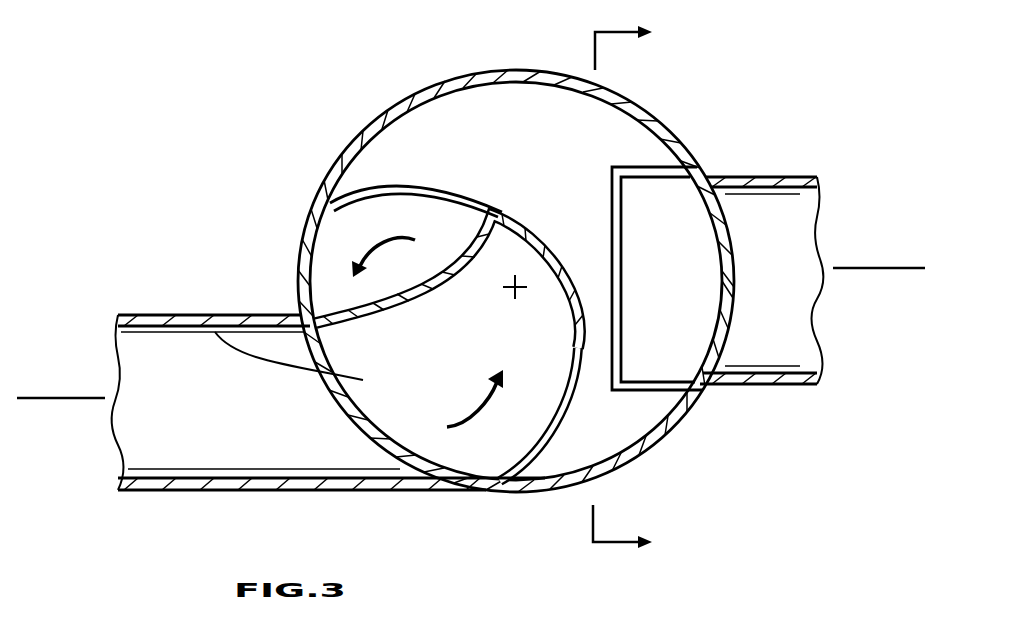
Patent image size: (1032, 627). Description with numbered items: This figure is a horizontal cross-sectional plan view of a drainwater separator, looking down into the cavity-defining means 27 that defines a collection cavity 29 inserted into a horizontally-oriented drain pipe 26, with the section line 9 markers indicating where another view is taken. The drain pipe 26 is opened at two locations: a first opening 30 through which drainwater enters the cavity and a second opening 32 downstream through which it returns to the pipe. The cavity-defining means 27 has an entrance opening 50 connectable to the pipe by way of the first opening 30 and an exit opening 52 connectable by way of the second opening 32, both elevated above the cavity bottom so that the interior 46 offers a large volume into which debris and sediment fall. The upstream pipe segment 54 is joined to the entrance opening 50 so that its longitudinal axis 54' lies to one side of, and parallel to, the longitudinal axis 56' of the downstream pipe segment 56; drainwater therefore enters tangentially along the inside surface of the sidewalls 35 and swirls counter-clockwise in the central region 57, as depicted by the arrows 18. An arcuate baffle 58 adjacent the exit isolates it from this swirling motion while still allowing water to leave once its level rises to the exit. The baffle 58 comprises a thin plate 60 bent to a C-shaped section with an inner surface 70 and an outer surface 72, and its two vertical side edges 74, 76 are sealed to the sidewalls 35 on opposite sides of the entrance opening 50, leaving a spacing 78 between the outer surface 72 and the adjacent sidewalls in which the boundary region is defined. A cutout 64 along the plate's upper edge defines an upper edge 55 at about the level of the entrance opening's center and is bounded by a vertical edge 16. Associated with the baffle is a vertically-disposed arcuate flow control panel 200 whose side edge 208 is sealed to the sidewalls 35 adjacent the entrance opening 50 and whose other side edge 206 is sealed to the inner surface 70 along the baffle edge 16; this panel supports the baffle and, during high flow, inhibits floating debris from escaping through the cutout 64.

The section line 9- 9 is at (636, 290).
The vertically-disposed edge 16 is at (495, 198).
The arrows 18 is at (393, 250).
The drain pipe 26 is at (175, 490).
The cavity-defining means 27 is at (710, 507).
The collection cavity 29 is at (308, 248).
The first opening 30 is at (435, 457).
The second opening 32 is at (693, 398).
The sidewalls 35 is at (607, 468).
The interior 46 is at (475, 451).
The entrance opening 50 is at (210, 328).
The exit opening 52 is at (740, 180).
The upstream pipe segment 54 is at (264, 496).
The longitudinal axis of the upstream pipe segment 54' is at (61, 375).
The upper edge of the cutout 55 is at (440, 183).
The downstream pipe segment 56 is at (762, 303).
The longitudinal axis of the downstream pipe segment 56' is at (879, 244).
The central region 57 is at (500, 341).
The baffle 58 is at (286, 128).
The plate 60 is at (548, 455).
The cutout 64 is at (410, 184).
The inner surface 70 is at (568, 420).
The outer surface 72 is at (565, 393).
The side edge 74 is at (480, 470).
The side edge 76 is at (330, 188).
The spacing 78 is at (463, 168).
The flow control panel 200 is at (342, 312).
The side edge 206 is at (490, 212).
The side edge 208 is at (310, 363).